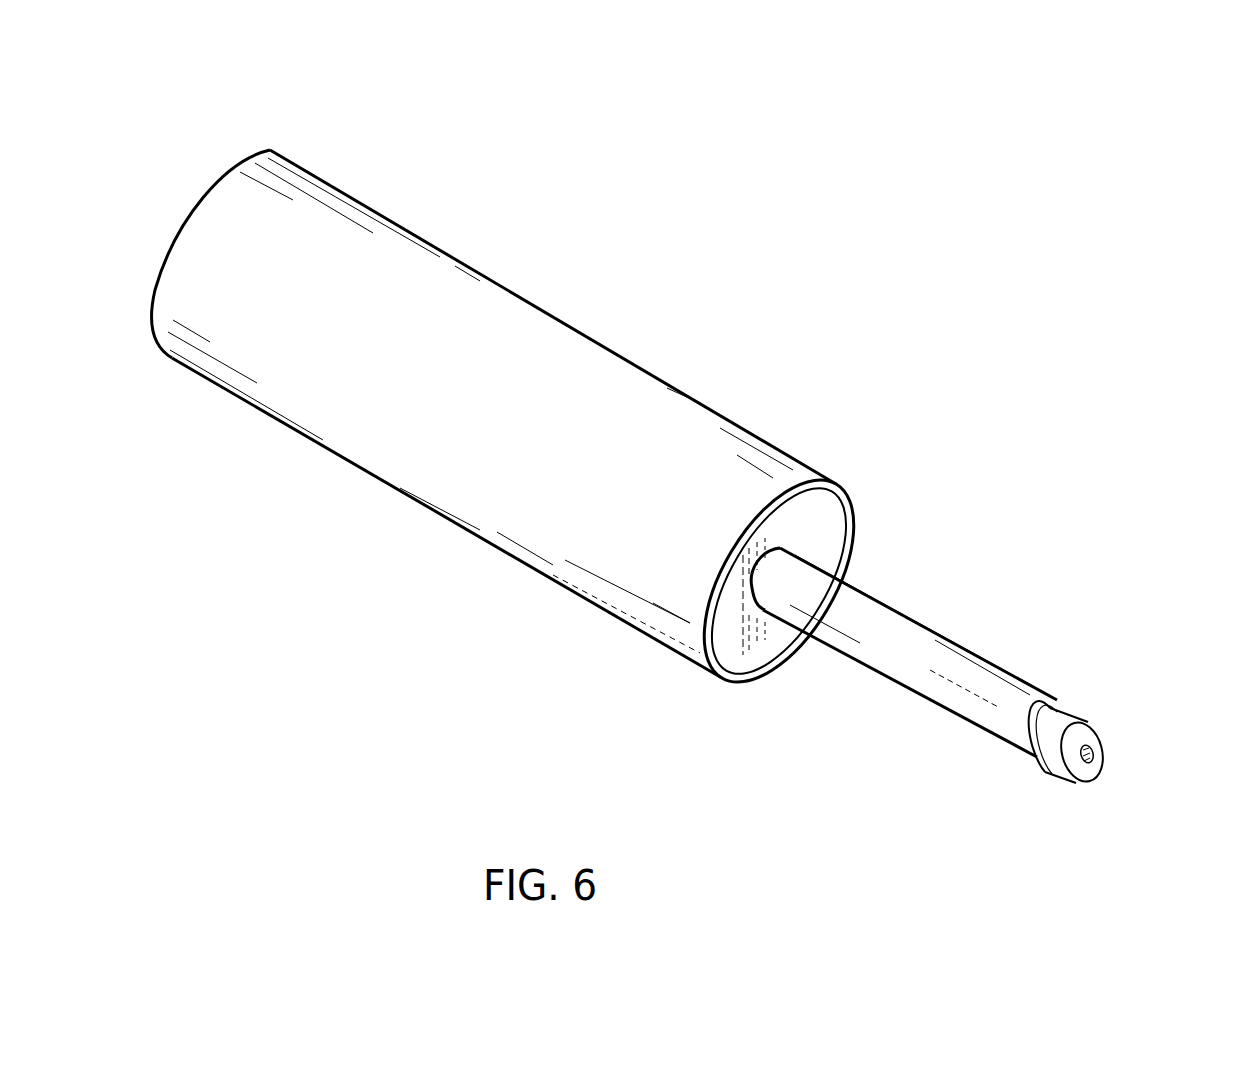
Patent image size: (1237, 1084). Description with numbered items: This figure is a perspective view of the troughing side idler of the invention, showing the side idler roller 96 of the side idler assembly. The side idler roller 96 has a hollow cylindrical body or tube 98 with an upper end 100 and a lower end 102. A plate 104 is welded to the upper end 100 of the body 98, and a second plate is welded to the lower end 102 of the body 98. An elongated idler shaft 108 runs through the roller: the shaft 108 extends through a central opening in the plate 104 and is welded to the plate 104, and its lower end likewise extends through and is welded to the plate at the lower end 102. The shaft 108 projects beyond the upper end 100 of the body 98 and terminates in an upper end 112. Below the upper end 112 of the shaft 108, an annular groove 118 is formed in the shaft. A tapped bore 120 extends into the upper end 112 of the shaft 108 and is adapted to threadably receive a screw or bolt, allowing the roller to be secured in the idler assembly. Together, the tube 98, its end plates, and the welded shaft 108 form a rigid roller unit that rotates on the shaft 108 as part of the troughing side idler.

The side idler roller 96 is at (642, 338).
The hollow cylindrical body 98 is at (687, 430).
The upper end 100 is at (858, 502).
The lower end 102 is at (216, 175).
The plate 104 is at (812, 537).
The idler shaft 108 is at (957, 650).
The upper end 112 is at (1097, 738).
The annular groove 118 is at (1057, 708).
The tapped bore 120 is at (1097, 762).